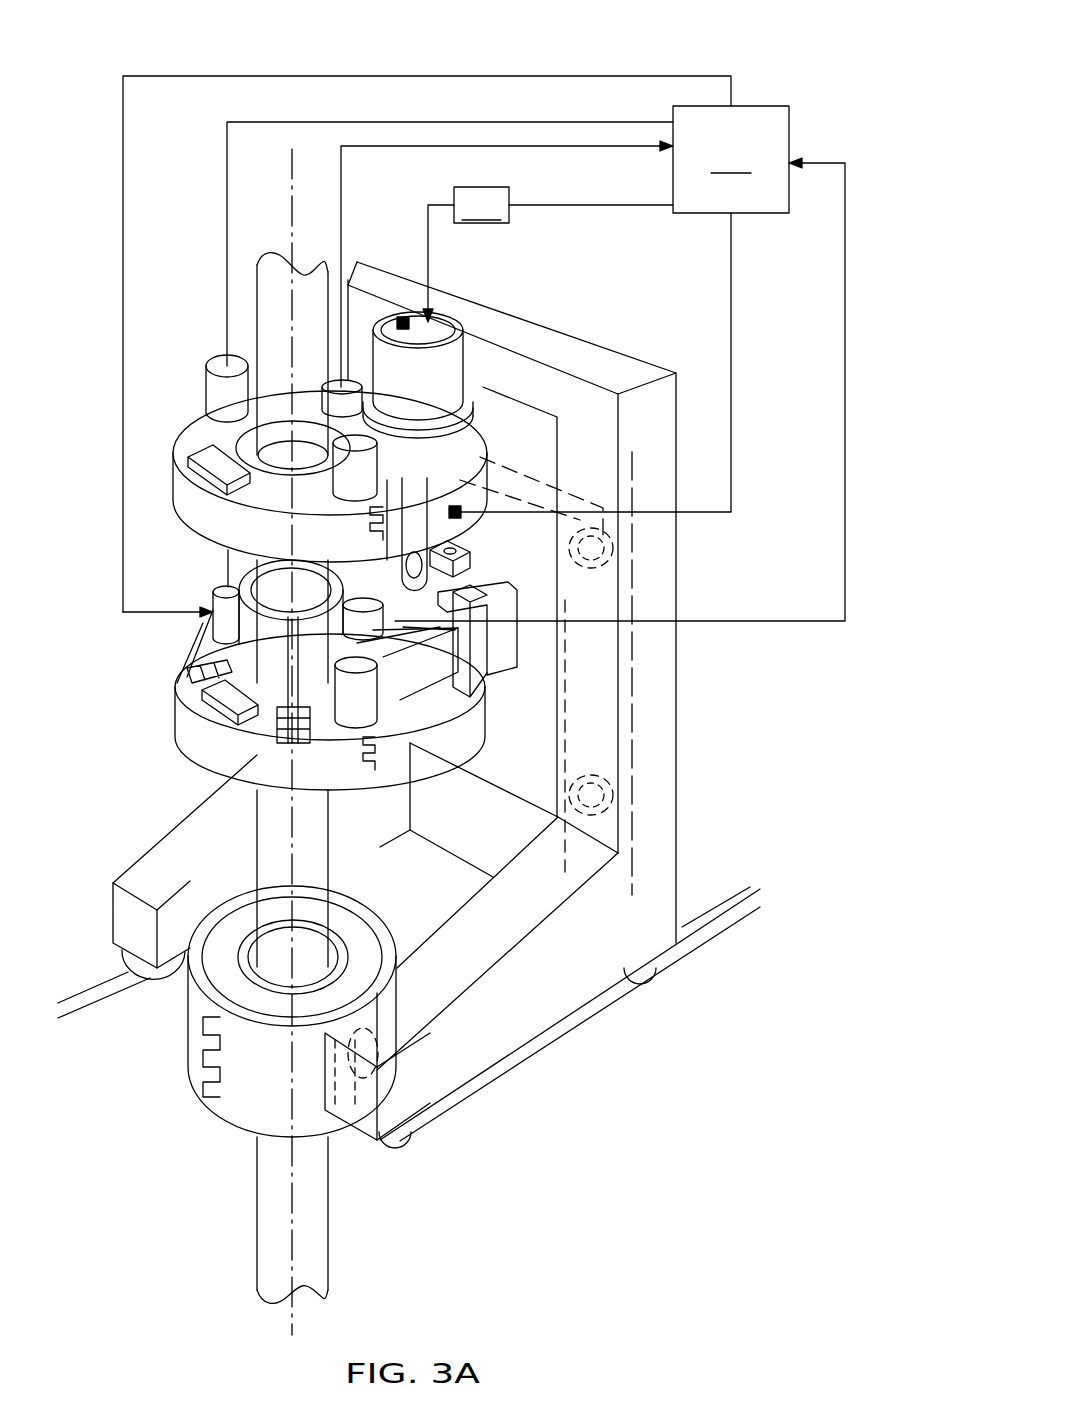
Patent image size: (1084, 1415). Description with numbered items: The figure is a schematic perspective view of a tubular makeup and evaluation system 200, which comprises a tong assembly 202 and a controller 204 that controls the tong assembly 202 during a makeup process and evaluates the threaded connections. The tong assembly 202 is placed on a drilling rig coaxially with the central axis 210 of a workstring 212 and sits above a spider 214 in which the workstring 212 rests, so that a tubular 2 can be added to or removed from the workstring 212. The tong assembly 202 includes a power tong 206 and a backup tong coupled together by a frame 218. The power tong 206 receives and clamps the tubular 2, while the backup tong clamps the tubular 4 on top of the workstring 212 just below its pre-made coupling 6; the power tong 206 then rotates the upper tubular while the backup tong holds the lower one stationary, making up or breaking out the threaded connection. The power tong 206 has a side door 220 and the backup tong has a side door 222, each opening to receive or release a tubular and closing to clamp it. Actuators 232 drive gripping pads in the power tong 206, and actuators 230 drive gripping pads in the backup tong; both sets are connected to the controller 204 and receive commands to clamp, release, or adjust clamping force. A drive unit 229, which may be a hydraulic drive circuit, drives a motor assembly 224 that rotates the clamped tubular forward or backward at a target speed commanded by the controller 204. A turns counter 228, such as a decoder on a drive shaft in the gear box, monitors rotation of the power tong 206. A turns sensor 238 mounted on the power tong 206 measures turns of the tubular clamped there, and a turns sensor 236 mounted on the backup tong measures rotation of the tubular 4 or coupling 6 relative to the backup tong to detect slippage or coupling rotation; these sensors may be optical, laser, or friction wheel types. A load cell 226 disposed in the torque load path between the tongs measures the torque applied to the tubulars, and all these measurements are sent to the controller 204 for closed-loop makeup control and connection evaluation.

The tubular makeup and evaluation system 200 is at (760, 58).
The controller 204 is at (484, 363).
The drive unit 229 is at (548, 254).
The tong assembly 202 is at (103, 394).
The tubular 2 is at (273, 298).
The side door 220 is at (228, 525).
The power tong 206 is at (180, 420).
The actuators 232 is at (220, 365).
The turns counter 228 is at (352, 380).
The turns sensor 238 is at (458, 385).
The motor assembly 224 is at (432, 325).
The load cell 226 is at (482, 456).
The frame 218 is at (430, 630).
The turns sensor 236 is at (390, 688).
The coupling 6 is at (275, 645).
The actuators 230 is at (225, 620).
The side door 222 is at (345, 772).
The tubular 4 is at (270, 850).
The spider 214 is at (230, 972).
The central axis 210 is at (285, 1172).
The workstring 212 is at (275, 1237).